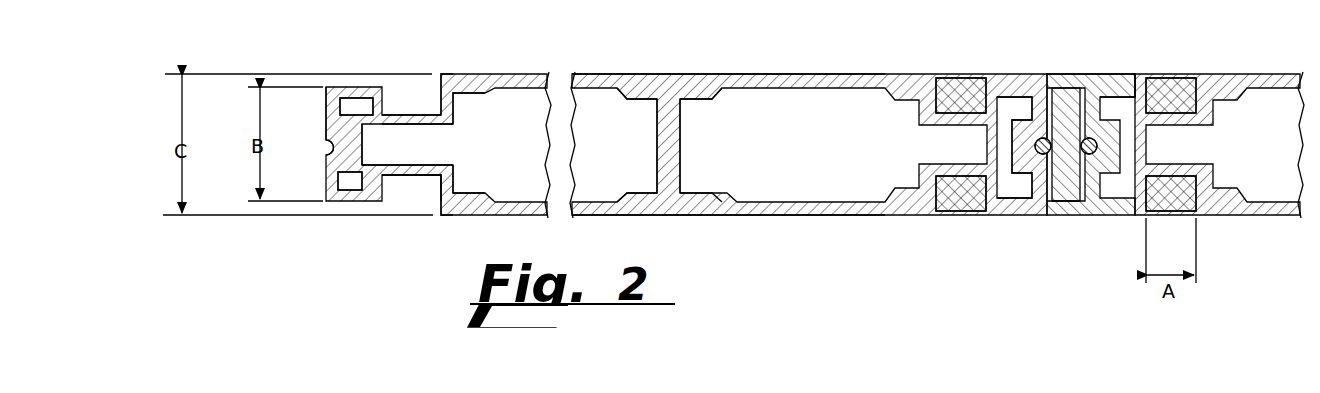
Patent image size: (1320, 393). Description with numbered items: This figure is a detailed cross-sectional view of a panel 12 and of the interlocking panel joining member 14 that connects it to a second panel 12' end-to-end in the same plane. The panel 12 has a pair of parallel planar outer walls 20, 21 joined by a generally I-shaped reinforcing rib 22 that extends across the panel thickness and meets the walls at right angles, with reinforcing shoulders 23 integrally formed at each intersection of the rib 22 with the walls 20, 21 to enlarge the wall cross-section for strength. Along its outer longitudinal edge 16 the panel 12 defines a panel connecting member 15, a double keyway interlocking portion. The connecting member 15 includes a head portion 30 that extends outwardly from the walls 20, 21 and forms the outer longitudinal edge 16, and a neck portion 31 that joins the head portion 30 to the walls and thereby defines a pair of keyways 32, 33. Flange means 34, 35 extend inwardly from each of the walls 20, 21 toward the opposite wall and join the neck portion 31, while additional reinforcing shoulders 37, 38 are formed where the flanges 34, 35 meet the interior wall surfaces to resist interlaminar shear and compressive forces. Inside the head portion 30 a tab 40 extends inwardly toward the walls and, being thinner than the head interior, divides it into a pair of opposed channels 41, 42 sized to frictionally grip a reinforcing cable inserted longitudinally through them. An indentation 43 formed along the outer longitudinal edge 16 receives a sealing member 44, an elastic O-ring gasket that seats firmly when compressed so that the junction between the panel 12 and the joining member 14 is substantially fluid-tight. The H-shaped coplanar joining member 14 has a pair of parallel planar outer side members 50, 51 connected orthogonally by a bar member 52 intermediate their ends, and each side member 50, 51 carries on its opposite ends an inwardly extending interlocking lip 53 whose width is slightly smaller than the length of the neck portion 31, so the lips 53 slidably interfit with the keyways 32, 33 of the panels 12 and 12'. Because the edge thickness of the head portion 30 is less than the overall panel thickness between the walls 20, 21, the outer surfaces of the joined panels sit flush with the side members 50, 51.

The panel 12 is at (809, 189).
The panel 12' is at (1217, 167).
The interlocking panel joining member 14 is at (1081, 66).
The panel connecting member 15 is at (348, 87).
The outer longitudinal edge 16 is at (325, 113).
The outer wall 20 is at (778, 73).
The outer wall 21 is at (728, 215).
The reinforcing rib 22 is at (670, 150).
The reinforcing shoulders 23 is at (690, 104).
The head portion 30 is at (362, 202).
The neck portion 31 is at (417, 176).
The keyway 32 is at (409, 110).
The keyway 33 is at (405, 183).
The flange means 34 is at (440, 84).
The flange means 35 is at (438, 205).
The reinforcing shoulder 37 is at (475, 95).
The reinforcing shoulder 38 is at (470, 196).
The tab 40 is at (361, 146).
The channel 41 is at (356, 107).
The channel 42 is at (347, 183).
The indentation 43 is at (333, 136).
The sealing member 44 is at (1062, 202).
The outer side member 50 is at (1123, 82).
The outer side member 51 is at (1030, 216).
The bar member 52 is at (1067, 107).
The interlocking lip 53 is at (963, 92).